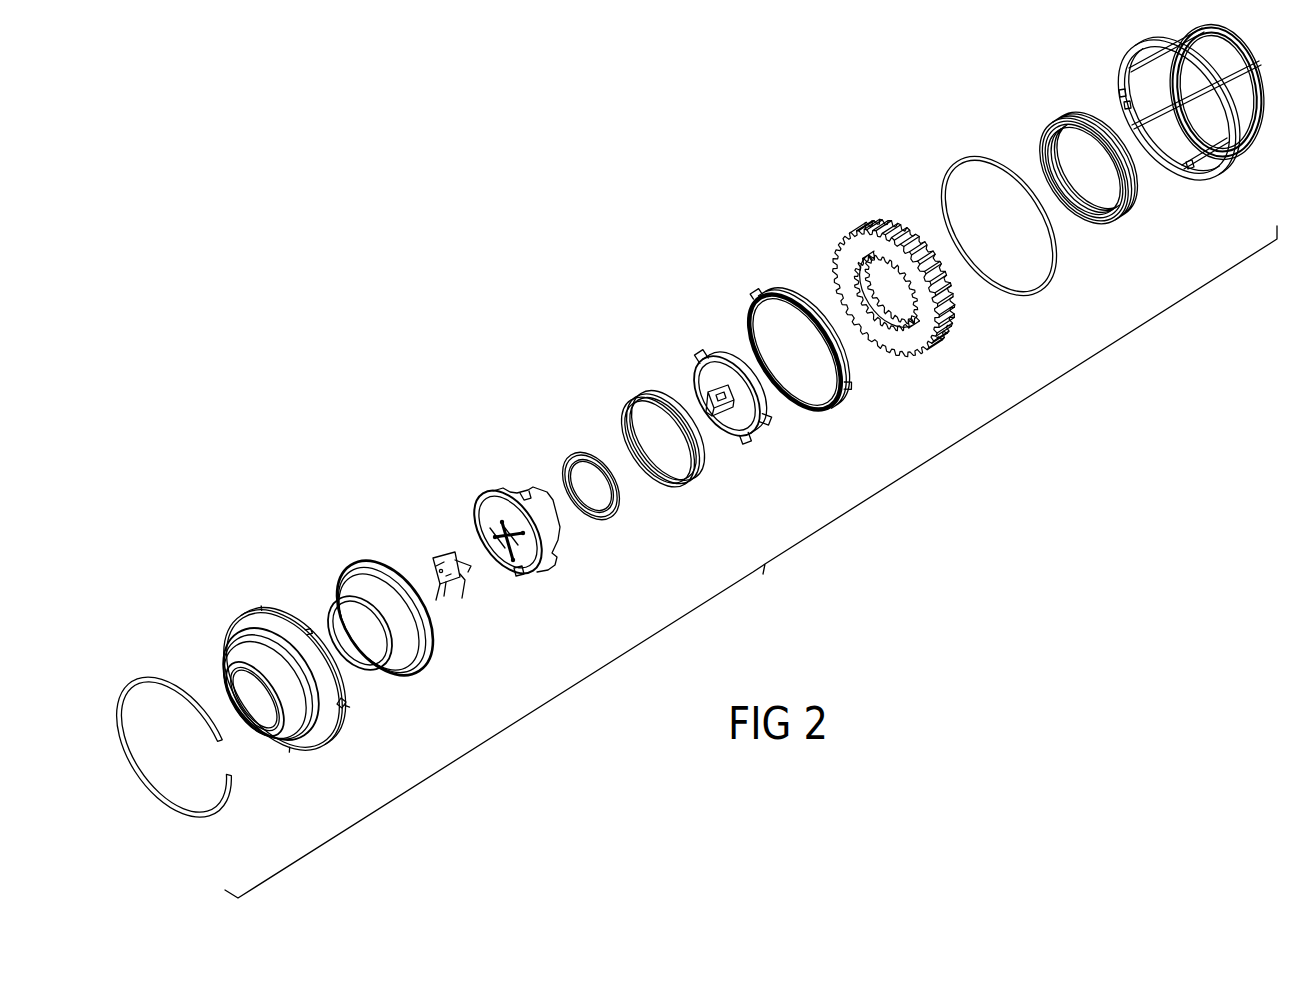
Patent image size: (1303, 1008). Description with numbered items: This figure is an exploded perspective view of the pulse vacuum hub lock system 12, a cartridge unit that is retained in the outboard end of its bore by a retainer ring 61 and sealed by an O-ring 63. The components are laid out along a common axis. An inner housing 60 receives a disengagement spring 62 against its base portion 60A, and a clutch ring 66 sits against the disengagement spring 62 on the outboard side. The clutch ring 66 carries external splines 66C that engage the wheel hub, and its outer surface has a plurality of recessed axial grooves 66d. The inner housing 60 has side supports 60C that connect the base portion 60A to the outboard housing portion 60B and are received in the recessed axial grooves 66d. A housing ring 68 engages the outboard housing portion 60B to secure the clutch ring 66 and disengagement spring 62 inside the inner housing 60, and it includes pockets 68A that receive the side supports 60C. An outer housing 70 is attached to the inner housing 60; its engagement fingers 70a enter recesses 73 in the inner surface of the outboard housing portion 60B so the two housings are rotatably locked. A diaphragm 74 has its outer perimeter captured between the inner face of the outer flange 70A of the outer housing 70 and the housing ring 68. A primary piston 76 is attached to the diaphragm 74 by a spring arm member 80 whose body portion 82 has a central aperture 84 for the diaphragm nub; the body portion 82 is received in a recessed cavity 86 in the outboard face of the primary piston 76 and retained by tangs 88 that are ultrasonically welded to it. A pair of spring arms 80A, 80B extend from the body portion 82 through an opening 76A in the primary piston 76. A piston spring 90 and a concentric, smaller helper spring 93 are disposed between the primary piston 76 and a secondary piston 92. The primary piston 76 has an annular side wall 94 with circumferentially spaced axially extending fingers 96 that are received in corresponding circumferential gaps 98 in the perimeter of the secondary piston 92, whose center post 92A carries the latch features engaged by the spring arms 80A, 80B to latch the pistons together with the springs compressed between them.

The pulse vacuum hub lock system 12 is at (751, 562).
The inner housing 60 is at (1173, 117).
The base portion 60A is at (1262, 100).
The outboard housing portion 60B is at (1232, 165).
The side supports 60C is at (1170, 46).
The retainer ring 61 is at (221, 826).
The disengagement spring 62 is at (1037, 115).
The O-ring 63 is at (1049, 294).
The clutch ring 66 is at (914, 305).
The external splines 66C is at (893, 287).
The recessed axial grooves 66d is at (941, 346).
The housing ring 68 is at (821, 363).
The pockets 68A is at (820, 426).
The outer housing 70 is at (290, 692).
The outer flange 70A is at (238, 633).
The engagement fingers 70a is at (346, 702).
The recesses 73 is at (1125, 105).
The diaphragm 74 is at (352, 578).
The primary piston 76 is at (500, 518).
The opening 76A is at (517, 576).
The spring arm member 80 is at (446, 586).
The spring arm 80A is at (446, 557).
The spring arm 80B is at (458, 592).
The body portion 82 is at (442, 598).
The central aperture 84 is at (435, 570).
The recessed cavity 86 is at (518, 572).
The tangs 88 is at (490, 519).
The piston spring 90 is at (621, 396).
The secondary piston 92 is at (723, 420).
The center post 92A is at (692, 392).
The helper spring 93 is at (607, 521).
The annular side wall 94 is at (506, 490).
The fingers 96 is at (533, 478).
The circumferential gaps 98 is at (732, 392).